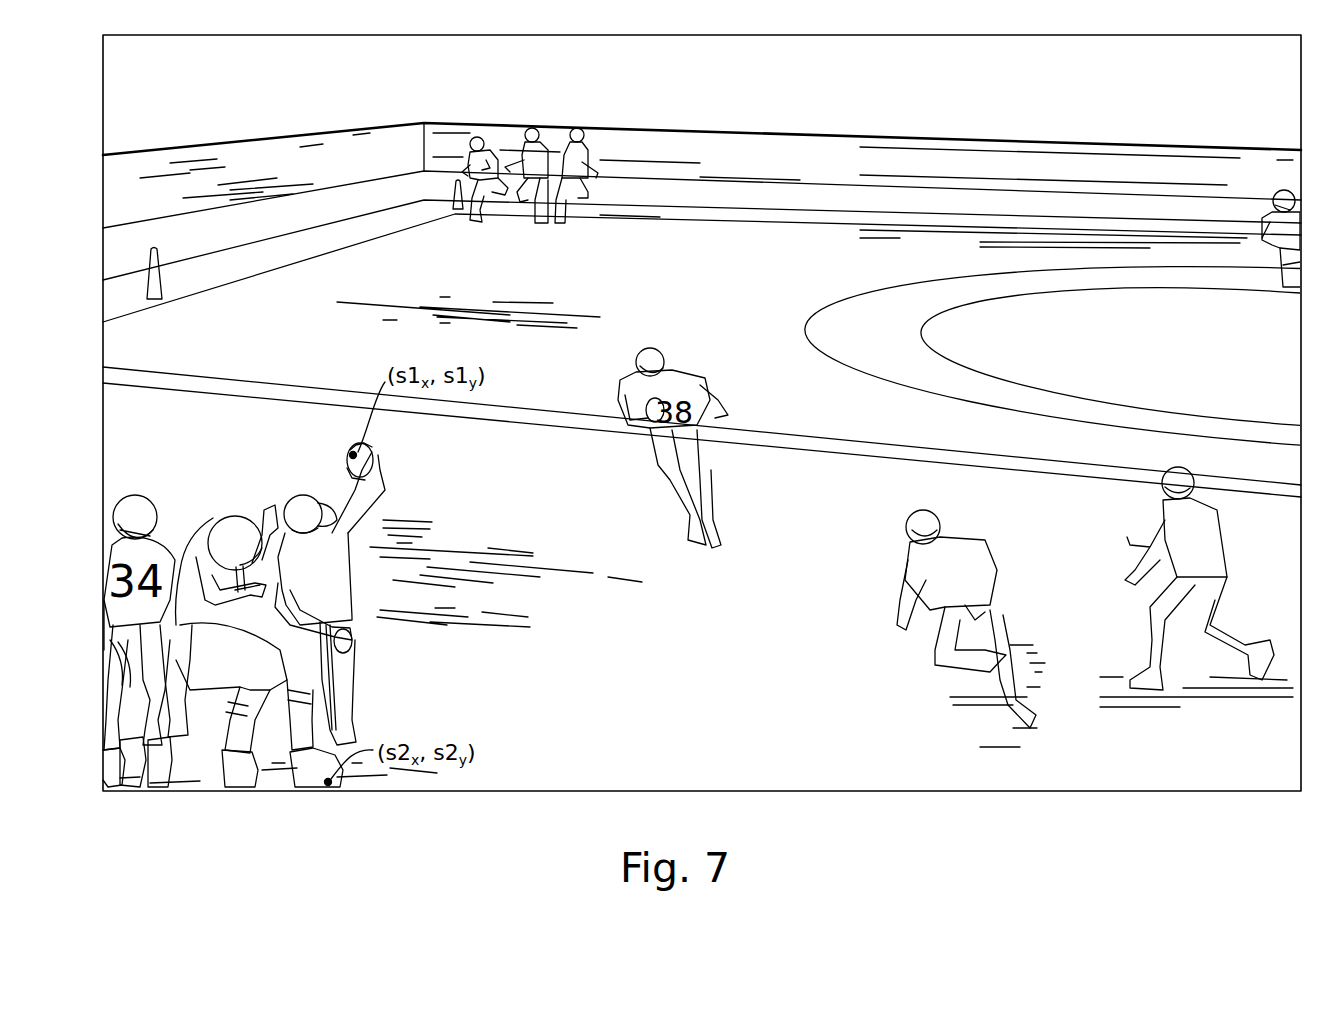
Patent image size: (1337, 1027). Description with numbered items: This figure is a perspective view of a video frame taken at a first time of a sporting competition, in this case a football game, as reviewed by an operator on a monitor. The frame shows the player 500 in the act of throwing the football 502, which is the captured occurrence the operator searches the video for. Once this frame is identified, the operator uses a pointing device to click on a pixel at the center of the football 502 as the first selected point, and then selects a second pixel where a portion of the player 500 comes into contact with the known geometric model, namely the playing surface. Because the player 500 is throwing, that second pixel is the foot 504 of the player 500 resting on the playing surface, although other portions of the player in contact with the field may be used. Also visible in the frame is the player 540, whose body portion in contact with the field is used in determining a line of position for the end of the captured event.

The player 500 is at (356, 690).
The football 502 is at (347, 455).
The foot 504 is at (328, 782).
The player 540 is at (535, 130).